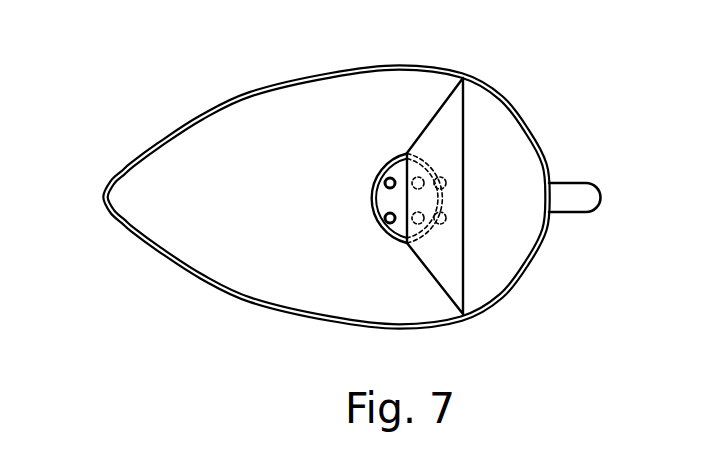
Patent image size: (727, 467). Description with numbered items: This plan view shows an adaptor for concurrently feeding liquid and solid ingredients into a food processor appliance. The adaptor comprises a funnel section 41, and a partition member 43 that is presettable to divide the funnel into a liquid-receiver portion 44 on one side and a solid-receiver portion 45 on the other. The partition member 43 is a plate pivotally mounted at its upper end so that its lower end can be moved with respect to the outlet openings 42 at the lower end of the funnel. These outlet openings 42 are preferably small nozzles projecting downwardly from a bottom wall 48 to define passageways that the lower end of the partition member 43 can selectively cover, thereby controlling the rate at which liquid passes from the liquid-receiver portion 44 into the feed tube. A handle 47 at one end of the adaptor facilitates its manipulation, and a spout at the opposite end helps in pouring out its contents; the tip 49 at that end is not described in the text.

The funnel section 41 is at (268, 80).
The outlet opening 42 is at (439, 182).
The partition member 43 is at (463, 285).
The liquid-receiver portion 44 is at (508, 236).
The solid-receiver portion 45 is at (238, 192).
The handle 47 is at (573, 187).
The bottom wall 48 is at (372, 190).
The tip 49 is at (110, 197).